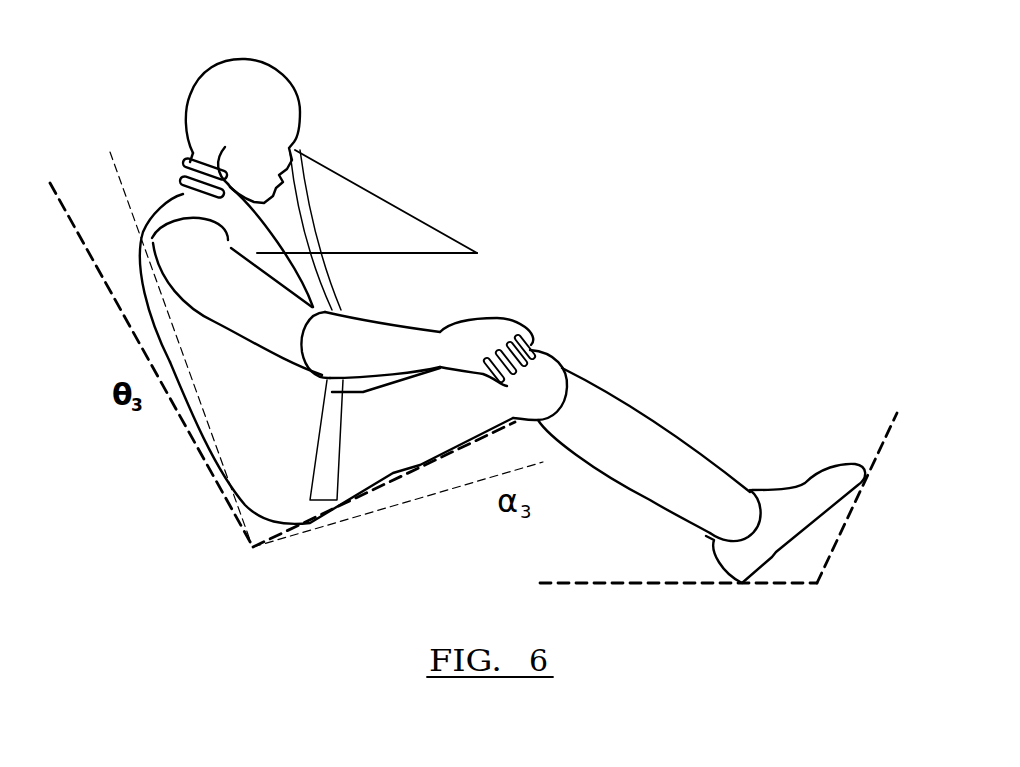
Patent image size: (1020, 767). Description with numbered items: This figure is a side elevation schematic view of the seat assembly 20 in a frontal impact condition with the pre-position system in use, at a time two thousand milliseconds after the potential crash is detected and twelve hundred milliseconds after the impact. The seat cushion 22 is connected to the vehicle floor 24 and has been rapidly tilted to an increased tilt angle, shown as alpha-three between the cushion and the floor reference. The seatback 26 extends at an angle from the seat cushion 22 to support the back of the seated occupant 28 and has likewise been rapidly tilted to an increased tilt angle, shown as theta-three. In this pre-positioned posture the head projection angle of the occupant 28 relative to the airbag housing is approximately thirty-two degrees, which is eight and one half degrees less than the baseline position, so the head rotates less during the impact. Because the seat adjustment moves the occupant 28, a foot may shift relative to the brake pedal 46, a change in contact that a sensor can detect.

The seat assembly 20 is at (489, 321).
The seat cushion 22 is at (410, 478).
The vehicle floor 24 is at (637, 583).
The seatback 26 is at (116, 302).
The occupant 28 is at (168, 195).
The brake pedal 46 is at (855, 508).